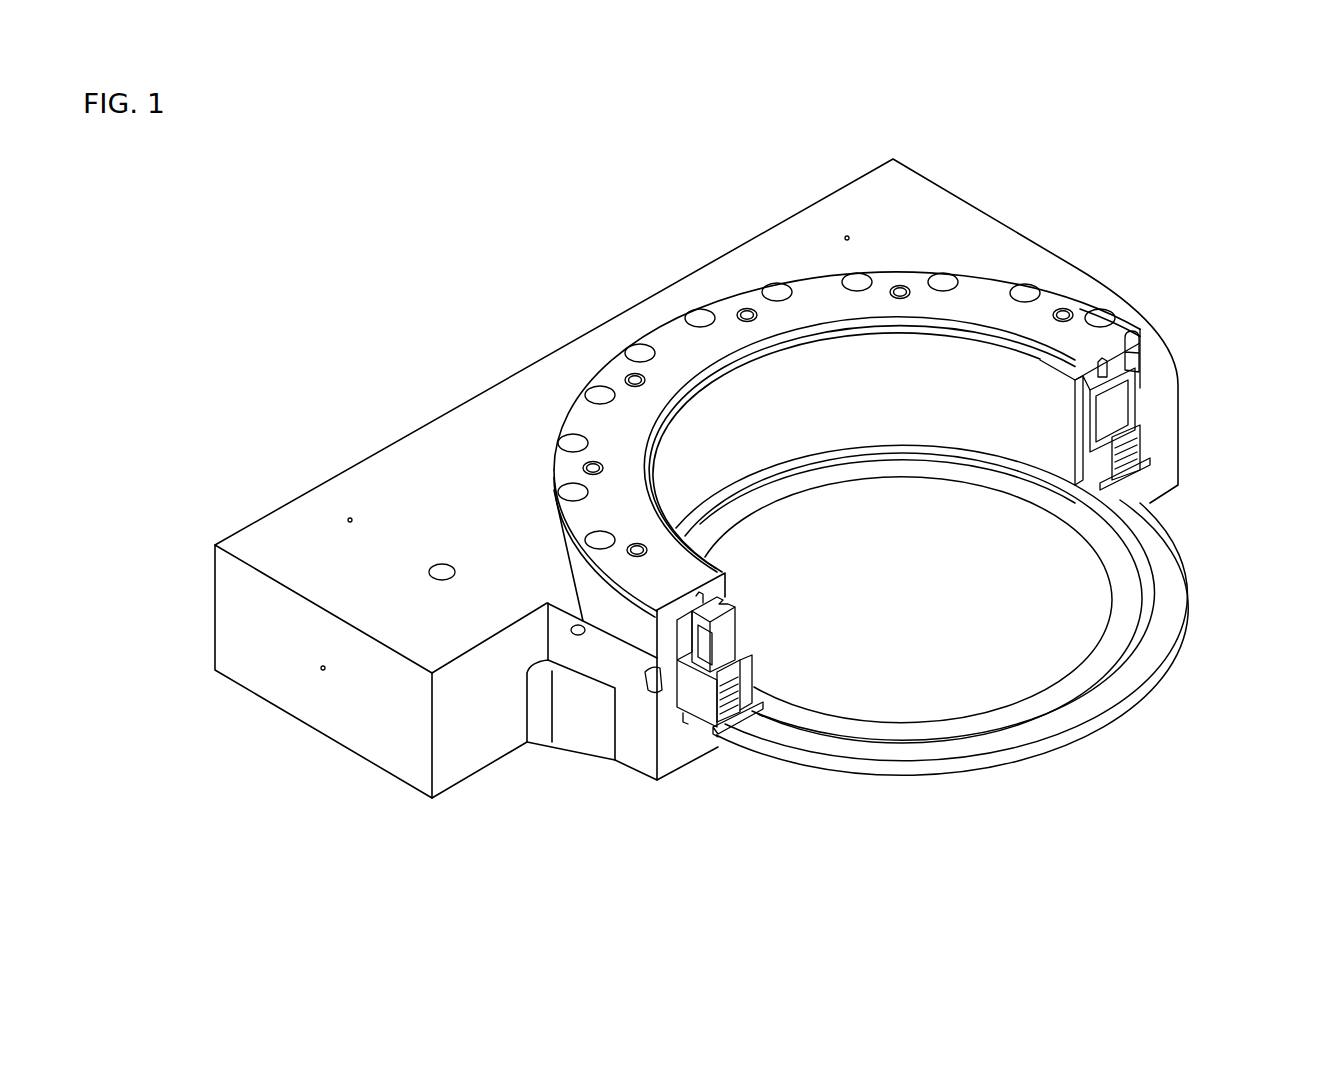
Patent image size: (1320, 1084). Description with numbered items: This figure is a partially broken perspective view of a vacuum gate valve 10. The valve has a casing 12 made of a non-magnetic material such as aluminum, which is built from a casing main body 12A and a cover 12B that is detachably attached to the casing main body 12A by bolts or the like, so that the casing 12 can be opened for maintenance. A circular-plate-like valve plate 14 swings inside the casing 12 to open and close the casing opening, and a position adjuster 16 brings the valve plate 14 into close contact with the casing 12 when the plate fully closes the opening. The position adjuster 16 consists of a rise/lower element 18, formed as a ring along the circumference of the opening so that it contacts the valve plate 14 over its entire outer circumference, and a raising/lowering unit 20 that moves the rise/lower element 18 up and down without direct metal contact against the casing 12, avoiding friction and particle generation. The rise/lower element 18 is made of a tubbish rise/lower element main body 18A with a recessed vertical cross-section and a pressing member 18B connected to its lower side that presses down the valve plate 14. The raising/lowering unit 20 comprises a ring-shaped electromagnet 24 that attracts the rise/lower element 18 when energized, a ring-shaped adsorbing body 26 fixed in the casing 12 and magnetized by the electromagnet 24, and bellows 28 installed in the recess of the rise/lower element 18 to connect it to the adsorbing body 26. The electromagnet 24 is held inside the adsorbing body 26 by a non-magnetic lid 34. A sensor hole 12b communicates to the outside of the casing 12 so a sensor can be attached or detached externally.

The vacuum gate valve 10 is at (739, 522).
The casing 12 is at (696, 494).
The casing main body 12A is at (745, 265).
The cover 12B is at (585, 425).
The sensor hole 12b is at (652, 685).
The valve plate 14 is at (1035, 732).
The position adjuster 16 is at (1169, 410).
The rise/lower element 18 is at (759, 724).
The rise/lower element main body 18A is at (697, 710).
The pressing member 18B is at (722, 745).
The raising/lowering unit 20 is at (1164, 440).
The electromagnet 24 is at (722, 647).
The adsorbing body 26 is at (733, 613).
The bellows 28 is at (752, 688).
The lid 34 is at (745, 657).